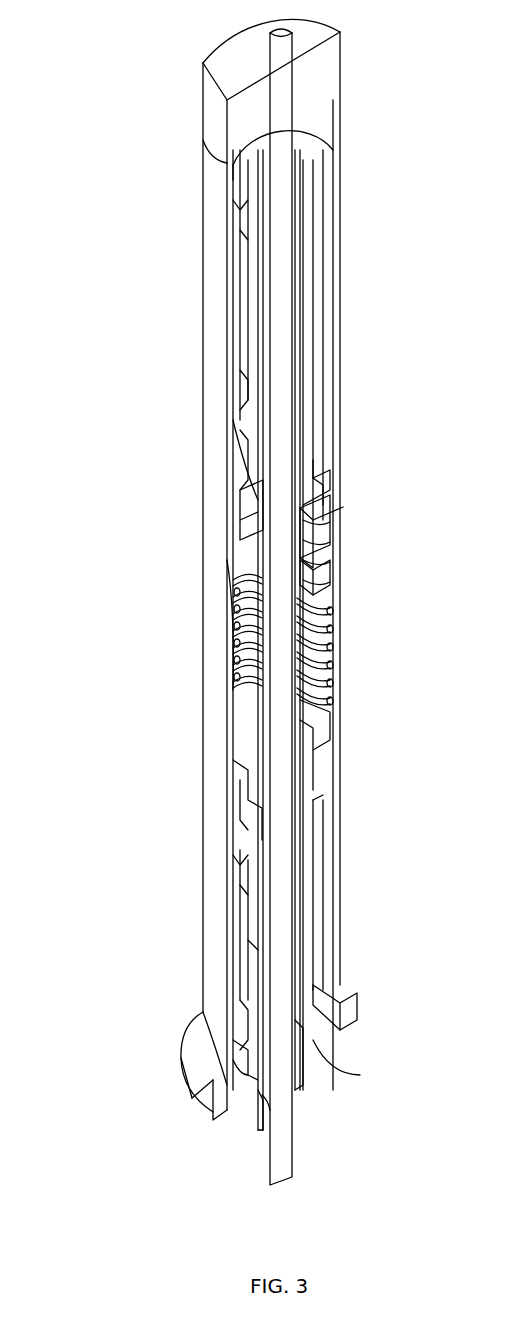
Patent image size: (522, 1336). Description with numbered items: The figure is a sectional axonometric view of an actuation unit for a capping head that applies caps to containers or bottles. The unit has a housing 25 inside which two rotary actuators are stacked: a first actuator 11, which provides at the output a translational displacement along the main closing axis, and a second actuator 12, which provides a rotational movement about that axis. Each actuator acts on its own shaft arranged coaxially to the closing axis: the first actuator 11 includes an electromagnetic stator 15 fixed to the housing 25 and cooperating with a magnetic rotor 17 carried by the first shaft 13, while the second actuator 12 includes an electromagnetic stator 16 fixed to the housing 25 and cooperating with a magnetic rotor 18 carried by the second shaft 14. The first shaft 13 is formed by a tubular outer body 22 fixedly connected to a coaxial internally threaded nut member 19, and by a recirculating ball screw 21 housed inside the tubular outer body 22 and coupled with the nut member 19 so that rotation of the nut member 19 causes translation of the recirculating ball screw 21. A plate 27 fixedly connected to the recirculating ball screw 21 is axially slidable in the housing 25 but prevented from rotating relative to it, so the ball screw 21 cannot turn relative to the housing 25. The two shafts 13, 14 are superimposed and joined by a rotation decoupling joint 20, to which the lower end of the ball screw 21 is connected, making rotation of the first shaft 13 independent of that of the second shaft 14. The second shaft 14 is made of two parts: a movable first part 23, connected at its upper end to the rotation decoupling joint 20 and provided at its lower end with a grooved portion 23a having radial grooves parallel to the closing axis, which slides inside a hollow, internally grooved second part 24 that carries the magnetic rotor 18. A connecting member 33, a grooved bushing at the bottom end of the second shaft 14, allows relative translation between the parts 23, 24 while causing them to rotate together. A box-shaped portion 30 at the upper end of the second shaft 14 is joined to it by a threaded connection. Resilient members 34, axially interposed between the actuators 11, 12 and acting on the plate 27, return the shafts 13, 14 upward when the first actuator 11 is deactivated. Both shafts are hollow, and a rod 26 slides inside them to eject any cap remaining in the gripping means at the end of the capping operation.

The first actuator 11 is at (243, 263).
The second actuator 12 is at (243, 913).
The first shaft 13 is at (108, 430).
The second shaft 14 is at (130, 695).
The electromagnetic stator 15 is at (247, 323).
The electromagnetic stator 16 is at (247, 1003).
The magnetic rotor 17 is at (257, 347).
The magnetic rotor 18 is at (253, 963).
The nut member 19 is at (257, 443).
The rotation decoupling joint 20 is at (307, 547).
The recirculating ball screw 21 is at (270, 487).
The tubular outer body 22 is at (250, 372).
The first part 23 is at (263, 713).
The grooved portion 23a is at (303, 1063).
The second part 24 is at (248, 837).
The housing 25 is at (217, 613).
The rod 26 is at (287, 78).
The plate 27 is at (300, 508).
The box-shaped portion 30 is at (327, 573).
The connecting member 33 is at (255, 1090).
The resilient members 34 is at (333, 672).